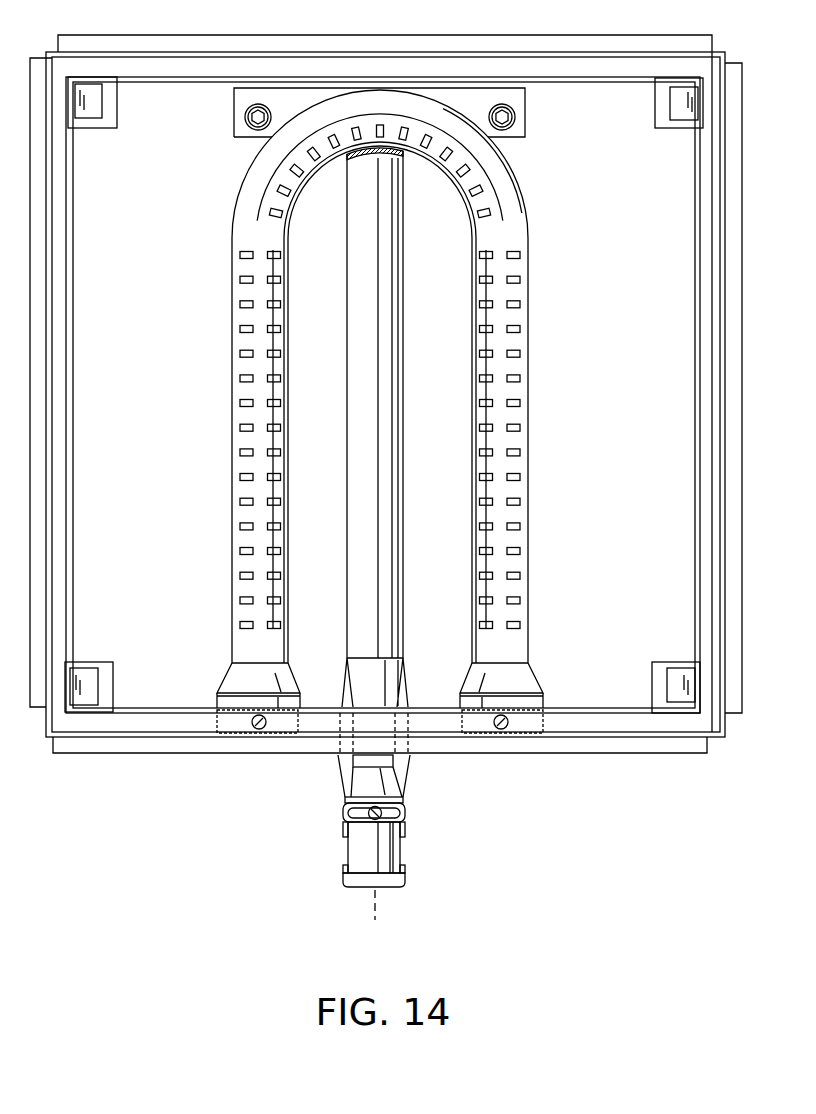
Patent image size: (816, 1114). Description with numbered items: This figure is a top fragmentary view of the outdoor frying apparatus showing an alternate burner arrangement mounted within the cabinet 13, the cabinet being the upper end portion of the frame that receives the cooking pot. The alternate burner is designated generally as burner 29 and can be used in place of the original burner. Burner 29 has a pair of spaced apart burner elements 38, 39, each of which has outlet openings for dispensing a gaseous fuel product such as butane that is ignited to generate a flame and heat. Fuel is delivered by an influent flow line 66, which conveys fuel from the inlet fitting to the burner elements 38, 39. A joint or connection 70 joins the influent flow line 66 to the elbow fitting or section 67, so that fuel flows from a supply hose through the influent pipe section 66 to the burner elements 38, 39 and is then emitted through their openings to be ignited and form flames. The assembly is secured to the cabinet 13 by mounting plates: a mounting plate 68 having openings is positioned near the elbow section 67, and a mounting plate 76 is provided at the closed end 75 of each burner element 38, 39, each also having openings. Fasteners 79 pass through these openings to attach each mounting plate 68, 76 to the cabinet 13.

The cabinet 13 is at (147, 754).
The burner 29 is at (364, 333).
The burner element 38 is at (232, 292).
The burner element 39 is at (528, 290).
The influent flow line 66 is at (354, 534).
The elbow fitting 67 is at (380, 112).
The mounting plate 68 is at (527, 132).
The joint 70 is at (368, 158).
The closed end 75 is at (215, 624).
The mounting plate 76 is at (218, 709).
The fastener 79 is at (245, 117).